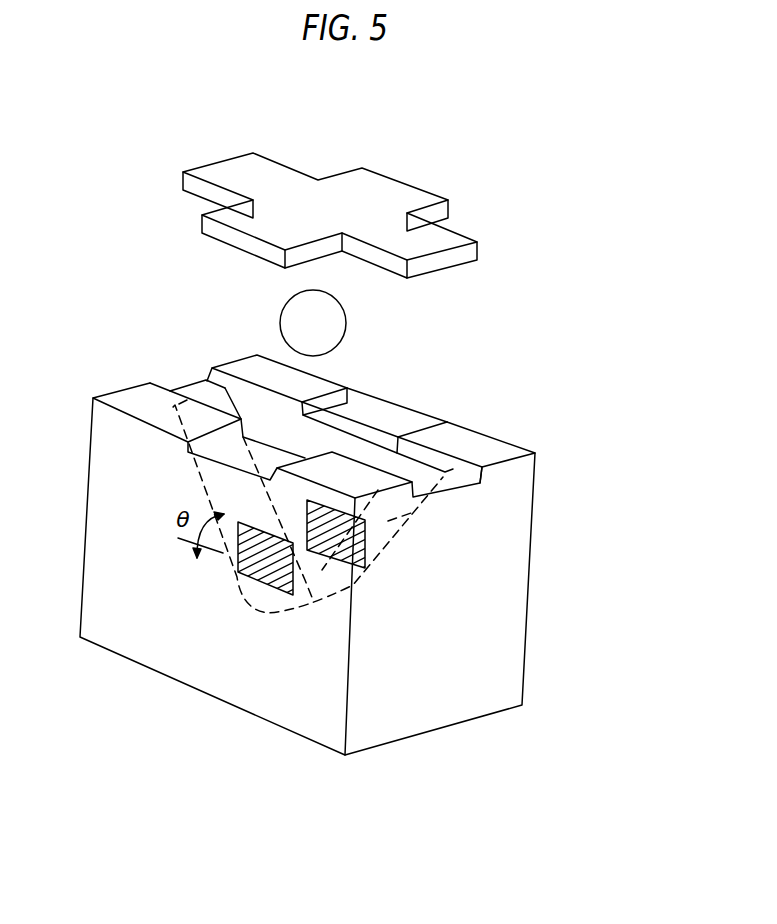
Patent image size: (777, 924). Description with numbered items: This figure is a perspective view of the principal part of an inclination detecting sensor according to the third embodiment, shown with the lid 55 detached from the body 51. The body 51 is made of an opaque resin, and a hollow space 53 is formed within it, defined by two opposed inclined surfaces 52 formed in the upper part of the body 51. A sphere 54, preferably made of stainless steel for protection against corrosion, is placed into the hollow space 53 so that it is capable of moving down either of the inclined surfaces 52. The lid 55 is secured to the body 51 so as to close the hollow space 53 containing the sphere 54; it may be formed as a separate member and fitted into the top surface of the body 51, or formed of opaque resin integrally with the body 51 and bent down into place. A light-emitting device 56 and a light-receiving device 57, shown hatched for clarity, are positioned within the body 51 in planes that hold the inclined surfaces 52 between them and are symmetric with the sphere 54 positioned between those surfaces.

The body 51 is at (510, 556).
The inclined surfaces 52 is at (215, 487).
The hollow space 53 is at (308, 440).
The sphere 54 is at (303, 322).
The lid 55 is at (392, 200).
The light-emitting device 56 is at (221, 588).
The light-receiving device 57 is at (327, 597).